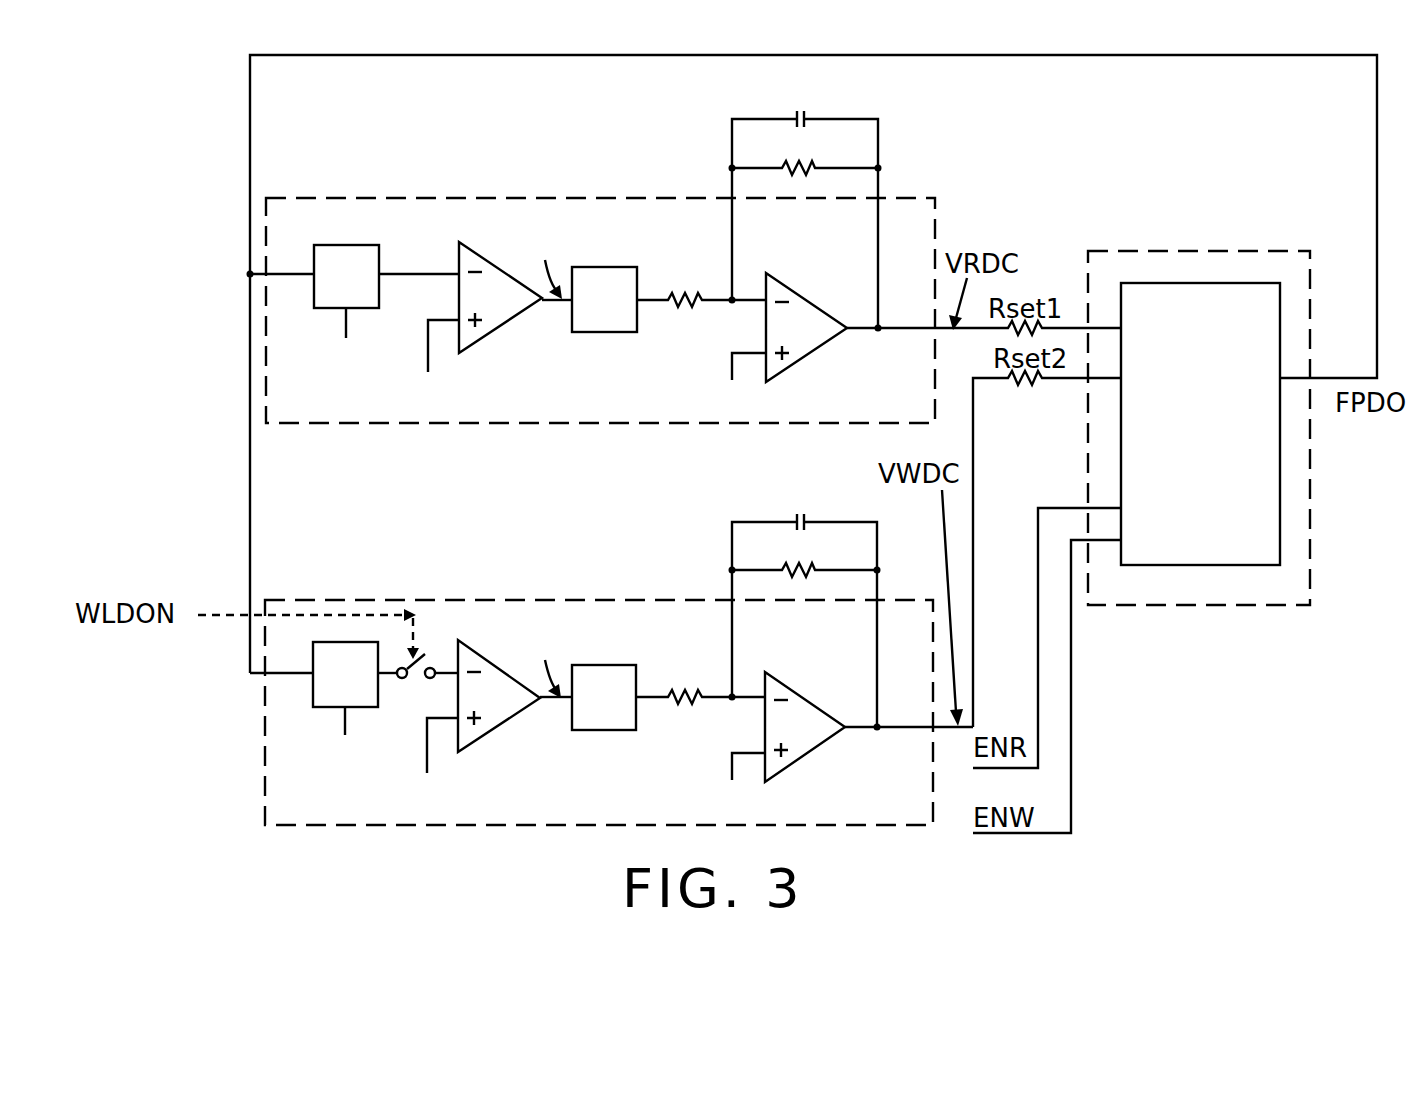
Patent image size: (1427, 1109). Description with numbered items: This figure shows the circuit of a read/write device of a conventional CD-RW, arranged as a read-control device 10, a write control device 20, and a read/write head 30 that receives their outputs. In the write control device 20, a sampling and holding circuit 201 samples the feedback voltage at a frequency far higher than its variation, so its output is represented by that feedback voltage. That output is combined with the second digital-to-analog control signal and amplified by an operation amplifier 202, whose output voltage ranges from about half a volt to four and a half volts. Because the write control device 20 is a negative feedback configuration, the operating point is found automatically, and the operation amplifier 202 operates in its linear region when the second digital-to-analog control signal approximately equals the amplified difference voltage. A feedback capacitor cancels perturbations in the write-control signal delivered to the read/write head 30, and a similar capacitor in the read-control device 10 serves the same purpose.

The read-control device 10 is at (600, 190).
The write control device 20 is at (600, 592).
The read/write head 30 is at (1272, 245).
The sampling and holding circuit 201 is at (298, 682).
The operation amplifier 202 is at (796, 763).